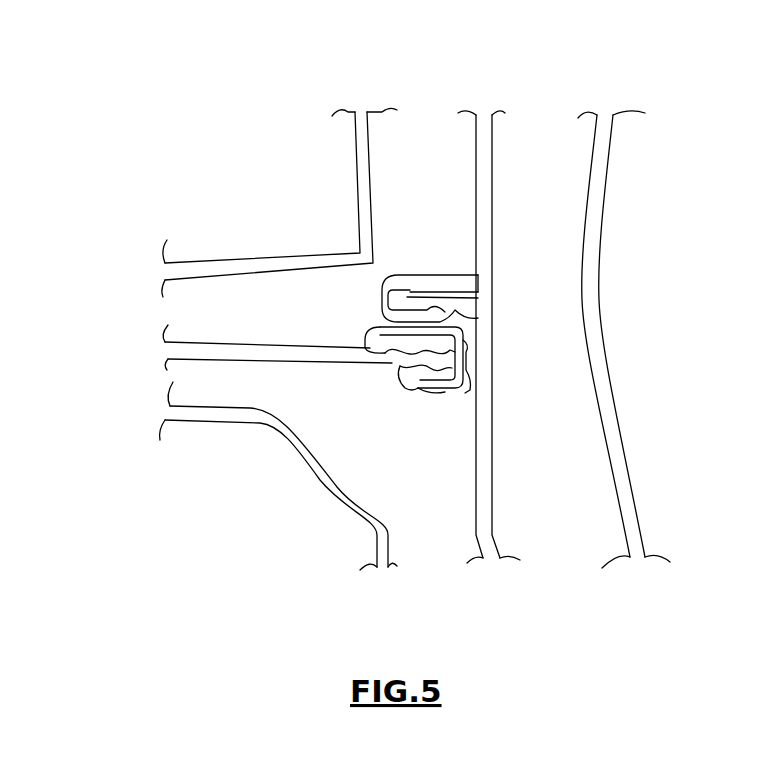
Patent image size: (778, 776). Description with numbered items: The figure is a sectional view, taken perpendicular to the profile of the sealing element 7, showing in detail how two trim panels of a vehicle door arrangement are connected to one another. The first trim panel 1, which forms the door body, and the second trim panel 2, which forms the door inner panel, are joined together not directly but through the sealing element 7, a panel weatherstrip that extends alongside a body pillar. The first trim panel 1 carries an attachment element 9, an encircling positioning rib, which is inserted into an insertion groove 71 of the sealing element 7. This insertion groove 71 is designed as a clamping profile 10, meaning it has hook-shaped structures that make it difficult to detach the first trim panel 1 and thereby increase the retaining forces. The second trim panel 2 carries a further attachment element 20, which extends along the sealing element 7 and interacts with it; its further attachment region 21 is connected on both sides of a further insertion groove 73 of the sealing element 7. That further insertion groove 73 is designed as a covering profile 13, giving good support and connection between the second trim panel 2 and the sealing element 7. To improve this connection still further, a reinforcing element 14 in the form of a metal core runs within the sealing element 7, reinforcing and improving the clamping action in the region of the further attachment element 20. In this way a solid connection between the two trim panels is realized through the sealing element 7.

The first trim panel 1 is at (483, 150).
The second trim panel 2 is at (178, 358).
The sealing element 7 is at (470, 387).
The attachment element 9 is at (440, 298).
The clamping profile 10 is at (392, 297).
The covering profile 13 is at (440, 388).
The reinforcing element 14 is at (470, 343).
The further attachment element 20 is at (222, 368).
The further attachment region 21 is at (367, 353).
The insertion groove 71 is at (463, 289).
The further insertion groove 73 is at (422, 373).